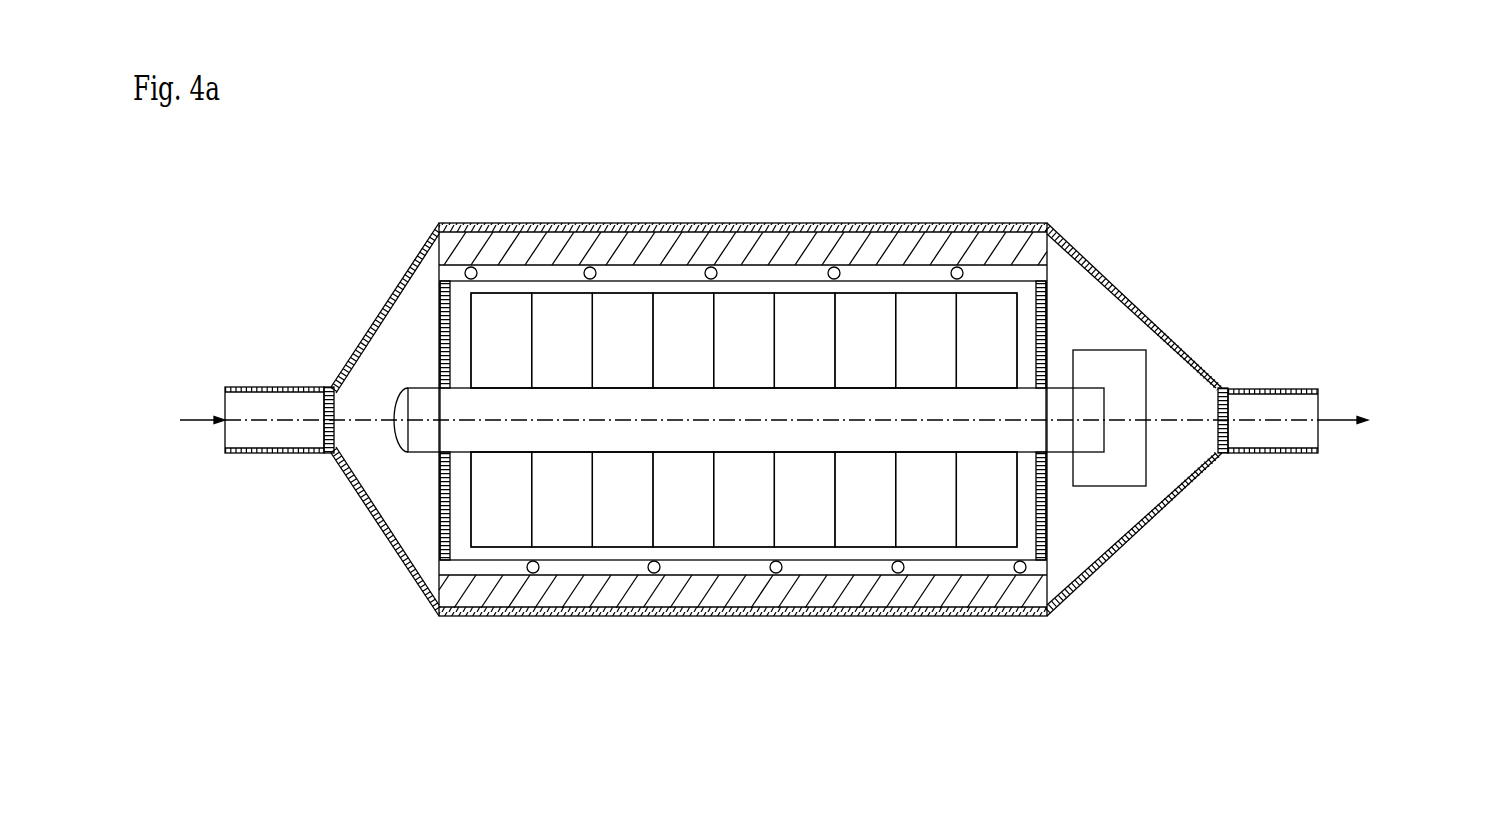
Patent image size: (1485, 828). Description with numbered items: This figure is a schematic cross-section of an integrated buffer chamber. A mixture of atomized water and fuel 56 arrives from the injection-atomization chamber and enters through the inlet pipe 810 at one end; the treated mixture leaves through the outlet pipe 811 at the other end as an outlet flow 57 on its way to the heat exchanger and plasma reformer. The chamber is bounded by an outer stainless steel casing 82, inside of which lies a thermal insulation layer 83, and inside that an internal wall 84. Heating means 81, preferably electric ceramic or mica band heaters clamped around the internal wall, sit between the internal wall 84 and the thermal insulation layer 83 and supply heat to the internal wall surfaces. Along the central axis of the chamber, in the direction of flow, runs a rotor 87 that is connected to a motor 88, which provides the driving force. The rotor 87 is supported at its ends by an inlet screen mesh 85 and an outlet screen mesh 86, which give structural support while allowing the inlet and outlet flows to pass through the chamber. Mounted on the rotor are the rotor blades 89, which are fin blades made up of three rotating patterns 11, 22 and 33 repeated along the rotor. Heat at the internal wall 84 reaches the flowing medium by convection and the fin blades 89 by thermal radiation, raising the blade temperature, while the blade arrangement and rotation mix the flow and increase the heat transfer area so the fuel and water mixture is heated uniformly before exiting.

The first rotating pattern 11 is at (683, 420).
The second rotating pattern 22 is at (744, 420).
The third rotating pattern 33 is at (804, 420).
The mixture of atomized water and fuel 56 is at (184, 416).
The outlet flow 57 is at (1398, 418).
The heating means 81 is at (654, 573).
The outer stainless steel casing 82 is at (740, 222).
The thermal insulation layer 83 is at (970, 250).
The internal wall 84 is at (720, 561).
The inlet screen mesh 85 is at (438, 507).
The outlet screen mesh 86 is at (1046, 534).
The rotor 87 is at (425, 402).
The motor 88 is at (1110, 367).
The rotor blades 89 is at (813, 547).
The inlet pipe 810 is at (272, 387).
The outlet pipe 811 is at (1288, 389).